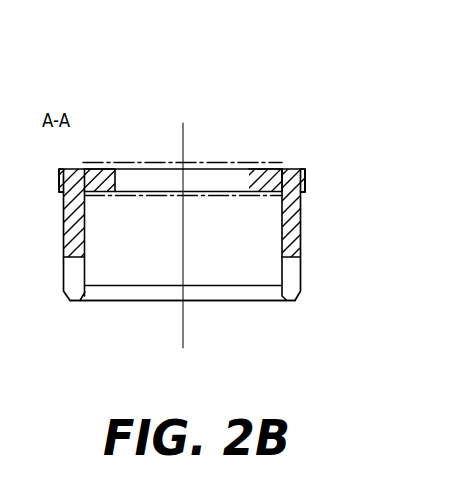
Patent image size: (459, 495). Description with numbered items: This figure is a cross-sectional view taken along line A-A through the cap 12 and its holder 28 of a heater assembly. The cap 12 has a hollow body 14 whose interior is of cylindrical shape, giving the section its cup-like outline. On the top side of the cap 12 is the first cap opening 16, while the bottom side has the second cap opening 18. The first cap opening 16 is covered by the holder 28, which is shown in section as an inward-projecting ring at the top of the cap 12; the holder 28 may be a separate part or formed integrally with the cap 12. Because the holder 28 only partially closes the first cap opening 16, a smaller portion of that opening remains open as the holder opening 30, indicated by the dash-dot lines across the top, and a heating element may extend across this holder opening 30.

The cap 12 is at (282, 255).
The hollow body 14 is at (143, 270).
The first cap opening 16 is at (255, 173).
The second cap opening 18 is at (215, 293).
The holder 28 is at (305, 182).
The holder opening 30 is at (157, 177).